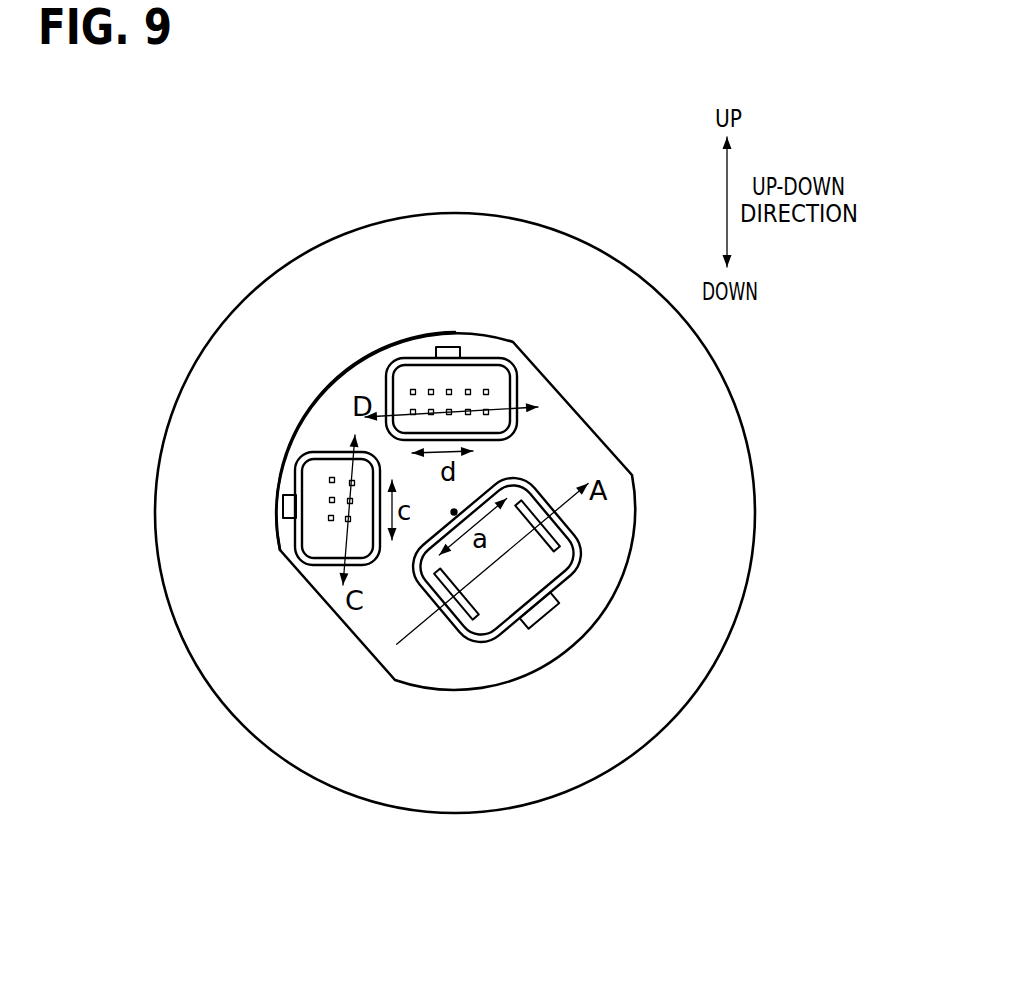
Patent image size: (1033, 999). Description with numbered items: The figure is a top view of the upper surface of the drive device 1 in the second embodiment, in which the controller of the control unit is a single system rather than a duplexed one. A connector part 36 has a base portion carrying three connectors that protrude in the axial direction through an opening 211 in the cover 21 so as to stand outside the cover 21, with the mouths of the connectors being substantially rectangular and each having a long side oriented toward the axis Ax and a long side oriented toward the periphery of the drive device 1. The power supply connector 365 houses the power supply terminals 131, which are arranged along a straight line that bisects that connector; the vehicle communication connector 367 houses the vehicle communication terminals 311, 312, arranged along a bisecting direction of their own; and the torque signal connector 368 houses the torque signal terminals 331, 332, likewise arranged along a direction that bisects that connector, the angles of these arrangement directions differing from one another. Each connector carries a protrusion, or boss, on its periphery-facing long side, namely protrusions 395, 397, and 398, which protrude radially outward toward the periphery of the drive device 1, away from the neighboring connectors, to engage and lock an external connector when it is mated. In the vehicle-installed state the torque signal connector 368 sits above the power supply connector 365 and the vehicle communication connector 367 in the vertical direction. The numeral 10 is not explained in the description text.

The drive device 1 is at (306, 198).
The motor main body 10 is at (245, 283).
The cover 21 is at (307, 263).
The opening 211 is at (317, 403).
The connector part 36 is at (334, 616).
The axis Ax is at (454, 512).
The torque signal connector 368 is at (517, 388).
The protrusion 398 is at (447, 348).
The torque signal terminals 331 is at (486, 391).
The torque signal terminals 332 is at (413, 412).
The vehicle communication terminals 312 is at (300, 468).
The protrusion 397 is at (283, 505).
The vehicle communication connector 367 is at (332, 480).
The vehicle communication terminals 311 is at (350, 518).
The power supply connector 365 is at (592, 540).
The protrusion 395 is at (552, 618).
The power supply terminals 131 is at (553, 547).